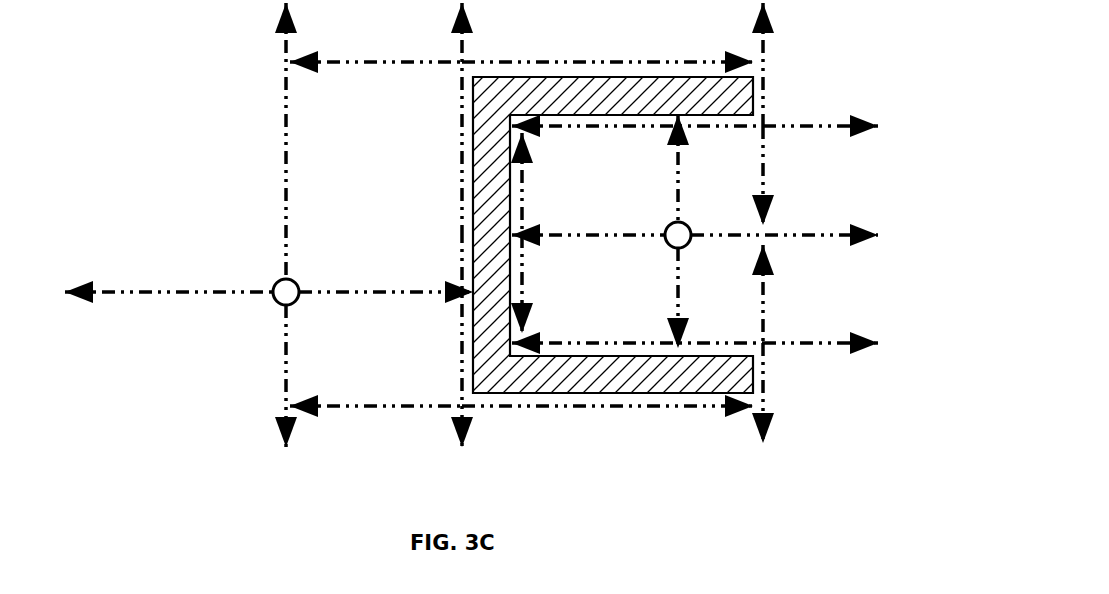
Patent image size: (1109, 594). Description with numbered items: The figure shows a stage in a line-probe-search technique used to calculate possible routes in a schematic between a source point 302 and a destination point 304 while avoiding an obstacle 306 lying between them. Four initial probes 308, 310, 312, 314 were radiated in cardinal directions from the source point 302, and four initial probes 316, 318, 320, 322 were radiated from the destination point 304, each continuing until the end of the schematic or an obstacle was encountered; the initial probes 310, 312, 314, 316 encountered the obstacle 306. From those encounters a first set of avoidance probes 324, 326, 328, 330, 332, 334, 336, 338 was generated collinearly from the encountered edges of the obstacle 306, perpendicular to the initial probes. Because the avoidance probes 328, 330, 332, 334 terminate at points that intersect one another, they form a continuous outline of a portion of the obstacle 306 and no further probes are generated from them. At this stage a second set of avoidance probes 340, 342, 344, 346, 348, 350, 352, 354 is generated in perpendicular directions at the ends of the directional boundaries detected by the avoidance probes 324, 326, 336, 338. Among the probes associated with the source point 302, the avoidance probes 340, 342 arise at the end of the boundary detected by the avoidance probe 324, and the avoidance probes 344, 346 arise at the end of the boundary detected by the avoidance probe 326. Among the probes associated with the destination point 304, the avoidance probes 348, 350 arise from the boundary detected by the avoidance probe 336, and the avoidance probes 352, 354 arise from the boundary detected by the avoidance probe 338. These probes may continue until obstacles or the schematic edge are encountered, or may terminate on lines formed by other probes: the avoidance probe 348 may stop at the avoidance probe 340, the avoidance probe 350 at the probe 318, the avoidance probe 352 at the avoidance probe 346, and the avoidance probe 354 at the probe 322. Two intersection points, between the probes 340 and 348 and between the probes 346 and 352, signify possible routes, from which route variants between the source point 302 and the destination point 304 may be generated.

The source point 302 is at (683, 247).
The destination point 304 is at (280, 288).
The obstacle 306 is at (512, 370).
The initial probe 308 is at (784, 228).
The initial probe 310 is at (697, 168).
The initial probe 312 is at (588, 227).
The initial probe 314 is at (659, 298).
The initial probe 316 is at (386, 285).
The initial probe 318 is at (306, 141).
The initial probe 320 is at (169, 301).
The initial probe 322 is at (305, 376).
The avoidance probe 324 is at (820, 136).
The avoidance probe 326 is at (820, 336).
The avoidance probe 328 is at (637, 136).
The avoidance probe 330 is at (637, 336).
The avoidance probe 332 is at (542, 184).
The avoidance probe 334 is at (542, 284).
The avoidance probe 336 is at (443, 116).
The avoidance probe 338 is at (443, 338).
The avoidance probe 340 is at (783, 64).
The avoidance probe 342 is at (783, 175).
The avoidance probe 344 is at (783, 294).
The avoidance probe 346 is at (783, 399).
The avoidance probe 348 is at (607, 54).
The avoidance probe 350 is at (376, 54).
The avoidance probe 352 is at (607, 414).
The avoidance probe 354 is at (376, 414).